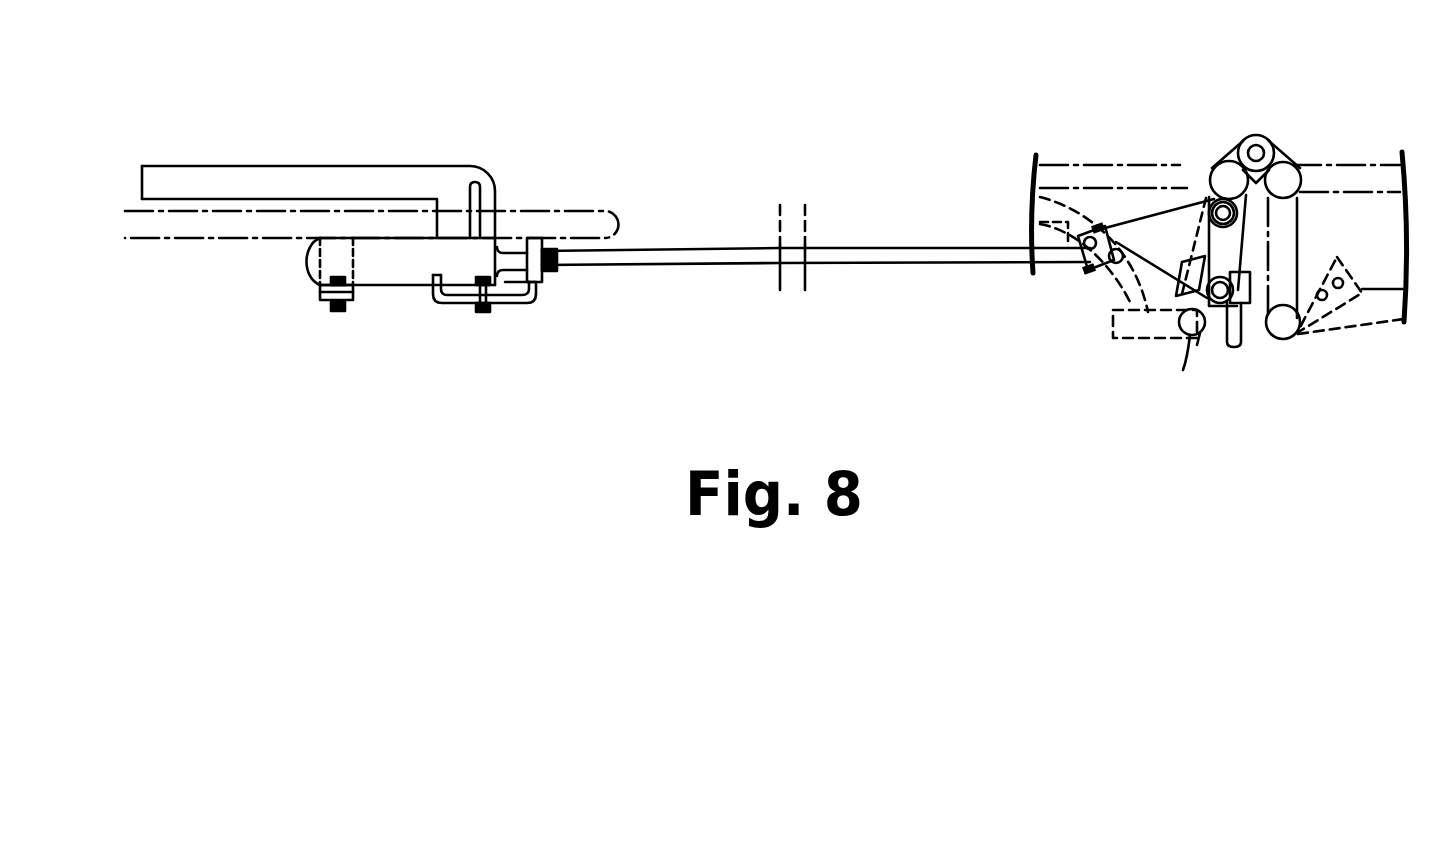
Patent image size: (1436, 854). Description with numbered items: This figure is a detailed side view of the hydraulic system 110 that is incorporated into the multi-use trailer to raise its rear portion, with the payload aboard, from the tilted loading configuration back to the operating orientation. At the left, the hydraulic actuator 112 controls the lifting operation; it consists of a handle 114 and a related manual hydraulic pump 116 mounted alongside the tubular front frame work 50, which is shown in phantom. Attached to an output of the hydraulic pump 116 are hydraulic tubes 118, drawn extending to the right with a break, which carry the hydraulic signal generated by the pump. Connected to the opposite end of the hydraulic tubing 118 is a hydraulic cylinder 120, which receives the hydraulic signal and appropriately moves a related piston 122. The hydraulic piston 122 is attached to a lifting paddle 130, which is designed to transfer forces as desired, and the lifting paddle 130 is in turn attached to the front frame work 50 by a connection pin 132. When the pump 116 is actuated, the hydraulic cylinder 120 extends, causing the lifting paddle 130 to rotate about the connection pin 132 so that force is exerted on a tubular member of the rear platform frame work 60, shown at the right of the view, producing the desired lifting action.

The frame work 50 is at (218, 223).
The rear platform frame work 60 is at (1370, 310).
The hydraulic system 110 is at (646, 135).
The actuator 112 is at (442, 158).
The handle 114 is at (167, 175).
The manual hydraulic pump 116 is at (392, 270).
The hydraulic tubes 118 is at (722, 265).
The hydraulic cylinder 120 is at (1147, 278).
The piston 122 is at (1192, 340).
The lifting paddle 130 is at (1237, 350).
The connection pin 132 is at (1183, 190).